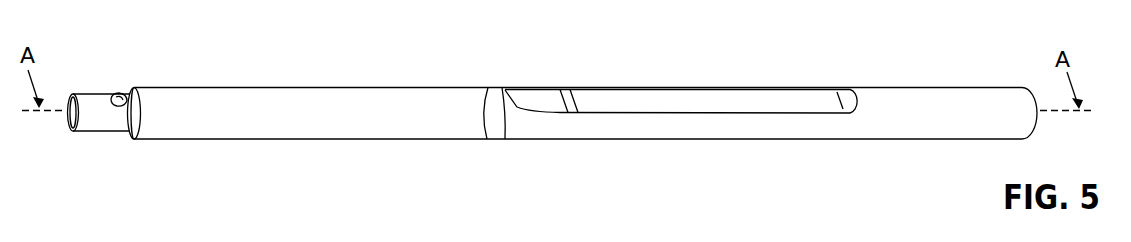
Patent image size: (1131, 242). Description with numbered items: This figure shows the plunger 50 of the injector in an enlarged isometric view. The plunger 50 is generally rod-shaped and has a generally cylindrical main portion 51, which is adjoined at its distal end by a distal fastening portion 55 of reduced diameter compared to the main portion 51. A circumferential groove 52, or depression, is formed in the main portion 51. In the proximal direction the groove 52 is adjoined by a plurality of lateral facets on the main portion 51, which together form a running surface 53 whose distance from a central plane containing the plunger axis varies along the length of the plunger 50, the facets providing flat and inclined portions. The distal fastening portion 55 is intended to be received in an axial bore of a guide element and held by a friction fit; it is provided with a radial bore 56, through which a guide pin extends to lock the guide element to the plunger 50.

The plunger 50 is at (216, 167).
The main portion 51 is at (315, 128).
The circumferential groove 52 is at (493, 123).
The running surface 53 is at (668, 97).
The distal fastening portion 55 is at (97, 120).
The radial bore 56 is at (117, 108).